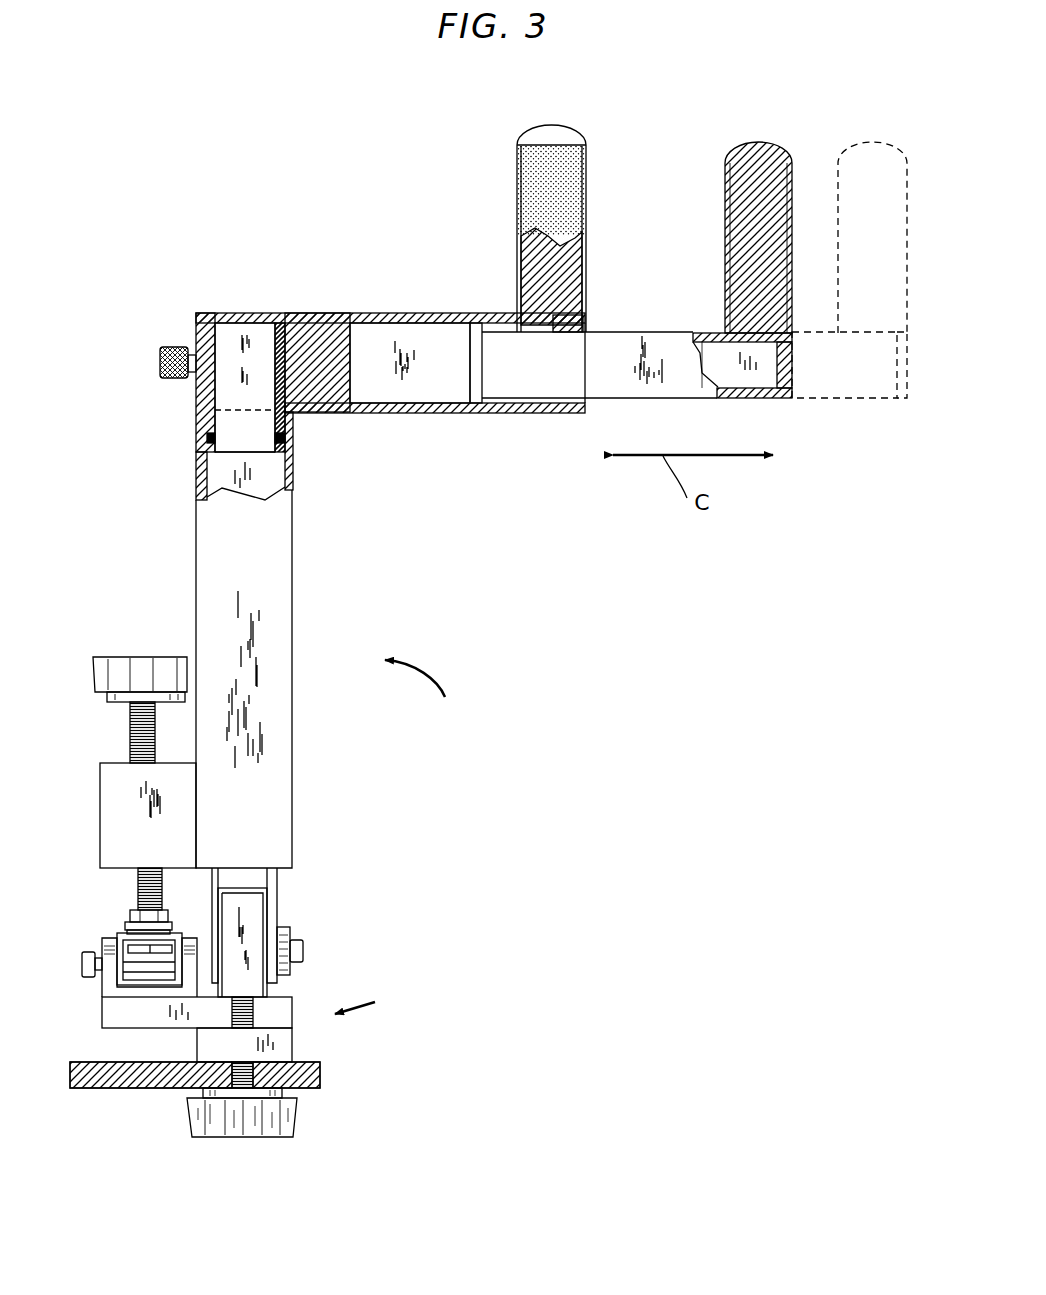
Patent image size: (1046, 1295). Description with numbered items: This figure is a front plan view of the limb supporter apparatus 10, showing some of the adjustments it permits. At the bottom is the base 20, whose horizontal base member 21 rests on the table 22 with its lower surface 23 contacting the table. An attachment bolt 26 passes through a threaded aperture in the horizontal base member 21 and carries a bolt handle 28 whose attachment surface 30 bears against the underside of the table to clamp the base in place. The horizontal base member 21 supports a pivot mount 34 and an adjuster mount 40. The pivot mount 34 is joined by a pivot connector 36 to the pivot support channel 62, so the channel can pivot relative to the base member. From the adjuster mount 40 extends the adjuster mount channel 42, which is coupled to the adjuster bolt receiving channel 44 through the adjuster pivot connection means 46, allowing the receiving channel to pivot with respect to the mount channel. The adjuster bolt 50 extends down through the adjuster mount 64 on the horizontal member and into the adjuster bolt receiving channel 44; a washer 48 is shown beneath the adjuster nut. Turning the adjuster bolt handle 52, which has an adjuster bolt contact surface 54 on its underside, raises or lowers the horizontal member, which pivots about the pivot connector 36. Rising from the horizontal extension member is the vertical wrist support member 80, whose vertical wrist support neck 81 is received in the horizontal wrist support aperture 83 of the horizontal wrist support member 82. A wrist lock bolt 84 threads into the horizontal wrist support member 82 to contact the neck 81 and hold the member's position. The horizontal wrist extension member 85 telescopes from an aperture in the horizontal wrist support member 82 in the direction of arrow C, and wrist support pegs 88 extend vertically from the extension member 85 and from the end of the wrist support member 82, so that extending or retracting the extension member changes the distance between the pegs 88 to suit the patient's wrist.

The limb supporter apparatus 10 is at (427, 694).
The base 20 is at (371, 1003).
The horizontal base member 21 is at (283, 1047).
The table 22 is at (282, 1023).
The lower surface of horizontal base member 23 is at (207, 1060).
The attachment bolt 26 is at (243, 1137).
The bolt handle 28 is at (215, 1123).
The attachment surface 30 is at (287, 1095).
The pivot mount 34 is at (257, 917).
The pivot connector 36 is at (305, 955).
The adjuster mount 40 is at (103, 996).
The adjuster mount channel 42 is at (97, 968).
The adjuster bolt receiving channel 44 is at (115, 920).
The adjuster pivot connection means 46 is at (83, 937).
The washer 48 is at (168, 932).
The adjuster bolt 50 is at (140, 882).
The adjuster bolt handle 52 is at (115, 665).
The adjuster bolt contact surface 54 is at (105, 700).
The pivot support channel 62 is at (265, 880).
The adjuster mount 64 is at (105, 783).
The vertical wrist support member 80 is at (265, 536).
The vertical wrist support neck 81 is at (257, 337).
The horizontal wrist support member 82 is at (330, 323).
The horizontal wrist support aperture 83 is at (195, 333).
The wrist lock bolt 84 is at (158, 363).
The horizontal wrist extension member 85 is at (632, 345).
The wrist support peg 88 is at (588, 173).